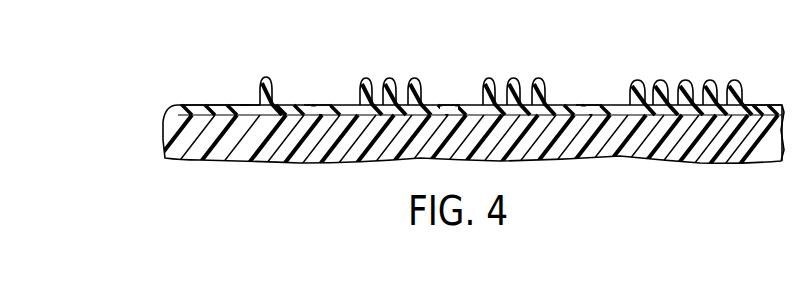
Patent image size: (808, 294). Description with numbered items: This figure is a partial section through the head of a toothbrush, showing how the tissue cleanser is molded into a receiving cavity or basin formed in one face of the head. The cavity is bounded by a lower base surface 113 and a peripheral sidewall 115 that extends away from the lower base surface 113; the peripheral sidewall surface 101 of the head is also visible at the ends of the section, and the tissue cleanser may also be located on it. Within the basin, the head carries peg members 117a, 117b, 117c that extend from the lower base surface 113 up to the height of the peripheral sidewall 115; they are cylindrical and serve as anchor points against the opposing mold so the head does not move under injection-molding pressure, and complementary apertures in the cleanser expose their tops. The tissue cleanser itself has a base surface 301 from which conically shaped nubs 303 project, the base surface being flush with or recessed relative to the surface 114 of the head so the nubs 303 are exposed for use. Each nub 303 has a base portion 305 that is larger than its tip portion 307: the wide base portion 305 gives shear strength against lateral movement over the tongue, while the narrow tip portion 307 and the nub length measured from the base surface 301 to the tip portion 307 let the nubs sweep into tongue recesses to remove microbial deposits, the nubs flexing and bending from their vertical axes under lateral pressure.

The peripheral sidewall surface 101 is at (163, 121).
The surface of the head 114 is at (190, 105).
The base portion 305 is at (260, 103).
The tip portion 307 is at (264, 77).
The peg member 117a is at (317, 106).
The nubs 303 is at (363, 82).
The peg member 117b is at (448, 106).
The peg member 117c is at (585, 106).
The base surface 301 is at (618, 106).
The peripheral sidewall 115 is at (750, 106).
The lower base surface 113 is at (703, 107).